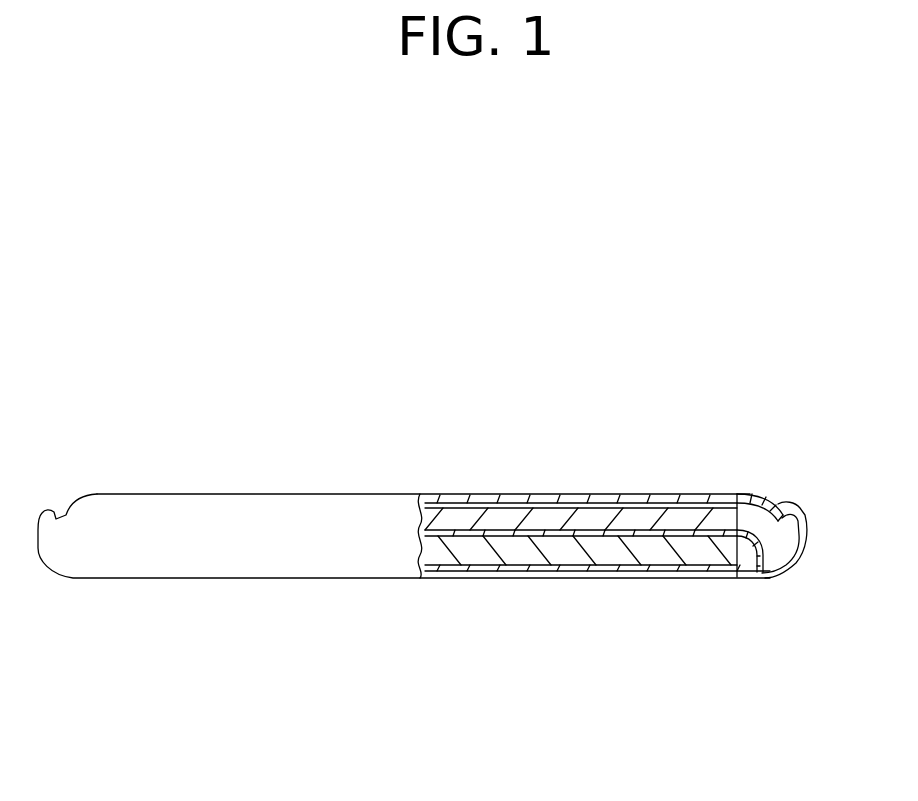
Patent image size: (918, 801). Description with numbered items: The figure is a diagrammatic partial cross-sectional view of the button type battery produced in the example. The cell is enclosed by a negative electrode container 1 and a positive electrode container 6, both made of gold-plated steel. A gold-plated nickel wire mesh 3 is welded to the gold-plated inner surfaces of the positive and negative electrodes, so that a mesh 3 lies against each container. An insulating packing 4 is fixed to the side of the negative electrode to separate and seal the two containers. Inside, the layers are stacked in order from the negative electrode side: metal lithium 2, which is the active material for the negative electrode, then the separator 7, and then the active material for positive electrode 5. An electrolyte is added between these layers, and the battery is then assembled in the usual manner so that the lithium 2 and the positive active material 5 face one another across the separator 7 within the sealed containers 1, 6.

The negative electrode container 1 is at (450, 494).
The lithium 2 is at (570, 513).
The gold-plated nickel wire mesh 3 is at (523, 494).
The insulating packing 4 is at (777, 545).
The active material for positive electrode 5 is at (616, 553).
The positive electrode container 6 is at (553, 575).
The separator 7 is at (732, 492).